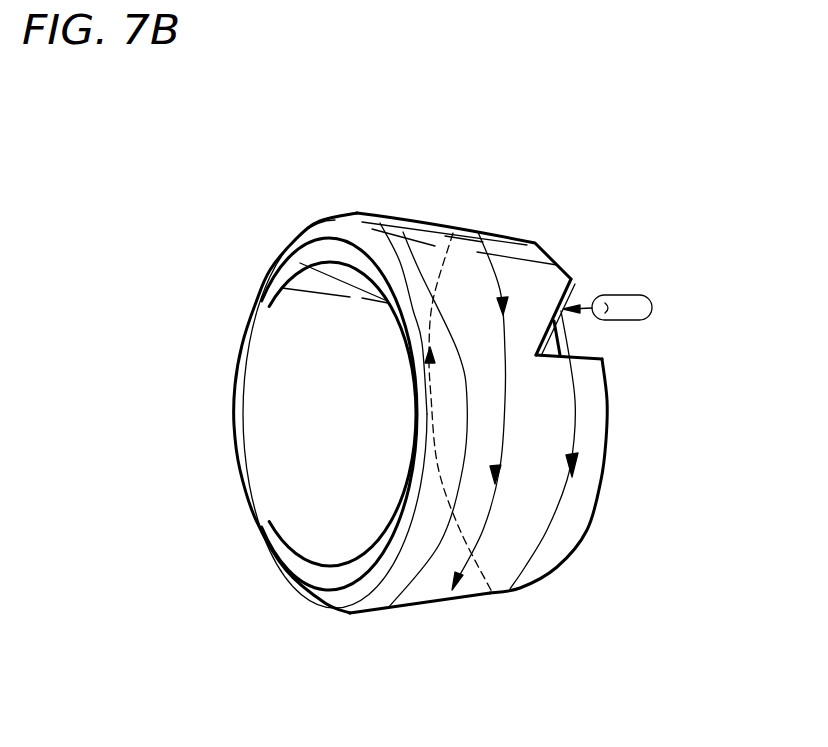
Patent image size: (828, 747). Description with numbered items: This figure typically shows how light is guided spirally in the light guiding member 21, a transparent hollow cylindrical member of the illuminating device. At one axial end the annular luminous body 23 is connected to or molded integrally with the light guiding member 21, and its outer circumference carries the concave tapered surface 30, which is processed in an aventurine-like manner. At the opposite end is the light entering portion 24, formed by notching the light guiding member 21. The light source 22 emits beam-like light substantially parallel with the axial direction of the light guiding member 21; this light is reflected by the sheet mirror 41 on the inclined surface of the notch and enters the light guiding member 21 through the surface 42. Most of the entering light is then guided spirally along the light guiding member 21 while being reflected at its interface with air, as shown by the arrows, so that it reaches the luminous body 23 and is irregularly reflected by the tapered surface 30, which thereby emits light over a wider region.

The light guiding member 21 is at (438, 206).
The light source 22 is at (652, 303).
The luminous body 23 is at (356, 214).
The light entering portion 24 is at (588, 336).
The tapered surface 30 is at (344, 614).
The sheet mirror 41 is at (572, 294).
The surface 42 is at (585, 358).